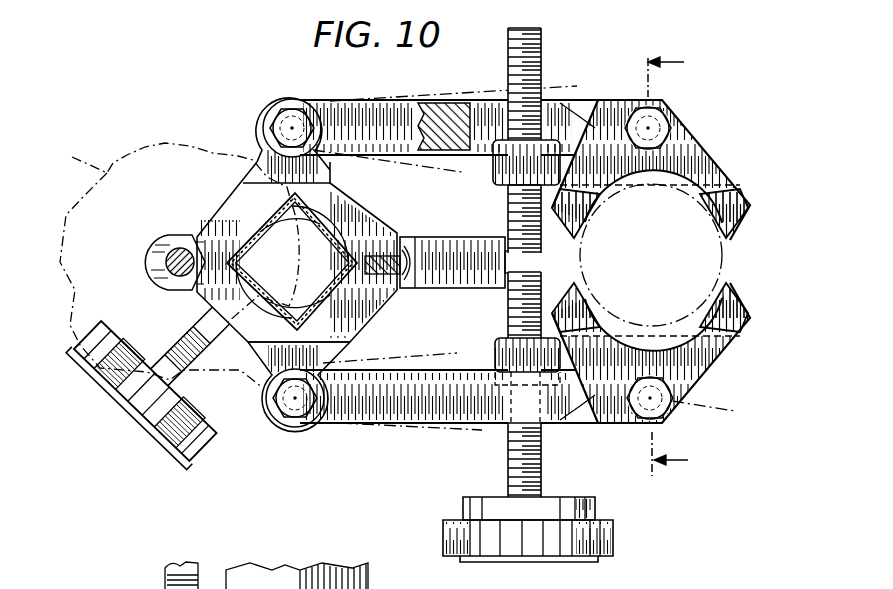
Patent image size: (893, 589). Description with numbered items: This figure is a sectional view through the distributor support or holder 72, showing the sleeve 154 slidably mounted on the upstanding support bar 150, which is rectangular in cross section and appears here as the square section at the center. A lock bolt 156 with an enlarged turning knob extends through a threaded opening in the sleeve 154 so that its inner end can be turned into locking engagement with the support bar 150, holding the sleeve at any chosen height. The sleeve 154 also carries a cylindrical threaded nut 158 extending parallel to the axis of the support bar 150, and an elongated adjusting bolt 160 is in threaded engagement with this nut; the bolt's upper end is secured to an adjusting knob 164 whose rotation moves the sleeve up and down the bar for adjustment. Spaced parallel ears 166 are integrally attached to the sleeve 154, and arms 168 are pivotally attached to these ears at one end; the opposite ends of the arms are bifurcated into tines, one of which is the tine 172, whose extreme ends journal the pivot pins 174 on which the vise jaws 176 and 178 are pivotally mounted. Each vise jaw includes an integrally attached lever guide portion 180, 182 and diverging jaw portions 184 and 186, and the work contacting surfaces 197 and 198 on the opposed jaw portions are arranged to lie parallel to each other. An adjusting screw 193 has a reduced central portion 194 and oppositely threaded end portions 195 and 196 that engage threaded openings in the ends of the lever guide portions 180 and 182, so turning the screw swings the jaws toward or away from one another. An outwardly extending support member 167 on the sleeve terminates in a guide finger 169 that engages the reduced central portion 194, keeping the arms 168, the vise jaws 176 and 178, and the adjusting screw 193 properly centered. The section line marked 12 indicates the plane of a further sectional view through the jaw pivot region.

The distributor support or holder 72 is at (727, 98).
The section line 12 is at (681, 263).
The support bar 150 is at (252, 224).
The sleeve 154 is at (252, 162).
The lock bolt 156 is at (150, 430).
The cylindrical threaded nut 158 is at (151, 248).
The adjusting bolt 160 is at (168, 262).
The adjusting knob 164 is at (168, 261).
The ears 166 is at (290, 98).
The support member 167 is at (440, 282).
The arms 168 is at (374, 113).
The guide finger 169 is at (518, 260).
The tine 172 is at (681, 259).
The pivot pins 174 is at (662, 116).
The vise jaw 176 is at (716, 158).
The vise jaw 178 is at (728, 354).
The lever guide portion 180 is at (496, 176).
The lever guide portion 182 is at (498, 356).
The jaw portion 184 is at (717, 187).
The jaw portion 186 is at (612, 185).
The adjusting screw 193 is at (548, 454).
The reduced central portion 194 is at (542, 265).
The threaded end portion 195 is at (512, 448).
The threaded end portion 196 is at (541, 80).
The work contacting surface 197 is at (590, 208).
The work contacting surface 198 is at (713, 210).